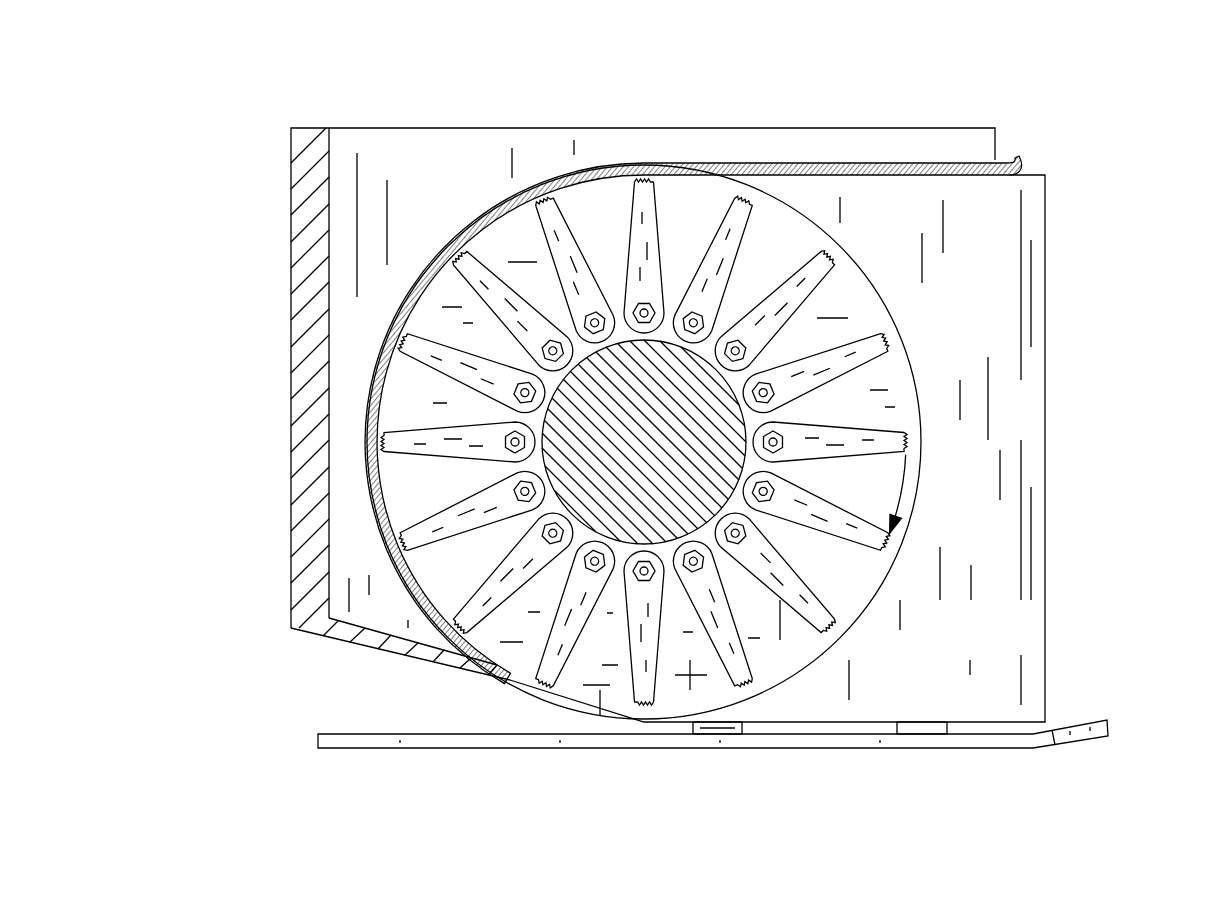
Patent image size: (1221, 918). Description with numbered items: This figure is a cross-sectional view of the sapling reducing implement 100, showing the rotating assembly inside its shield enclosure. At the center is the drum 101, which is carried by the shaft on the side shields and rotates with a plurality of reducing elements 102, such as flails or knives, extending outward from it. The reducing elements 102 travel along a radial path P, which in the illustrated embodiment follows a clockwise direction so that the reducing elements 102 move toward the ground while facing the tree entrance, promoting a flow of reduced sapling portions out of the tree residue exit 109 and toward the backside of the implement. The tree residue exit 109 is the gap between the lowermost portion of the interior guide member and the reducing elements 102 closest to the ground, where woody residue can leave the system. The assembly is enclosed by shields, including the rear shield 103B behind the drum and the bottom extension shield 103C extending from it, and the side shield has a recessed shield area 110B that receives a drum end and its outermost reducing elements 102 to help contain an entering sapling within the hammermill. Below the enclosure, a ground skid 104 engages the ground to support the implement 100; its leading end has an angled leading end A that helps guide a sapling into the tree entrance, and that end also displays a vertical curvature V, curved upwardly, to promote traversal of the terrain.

The sapling reducing implement 100 is at (1105, 100).
The drum 101 is at (677, 380).
The reducing elements 102 is at (808, 642).
The rear shield 103B is at (300, 305).
The bottom extension shield 103C is at (367, 642).
The ground skid 104 is at (418, 742).
The tree residue exit 109 is at (570, 688).
The recessed shield area 110B is at (885, 378).
The radial path P is at (905, 492).
The vertical curvature V is at (1040, 737).
The angled leading end A is at (1091, 735).